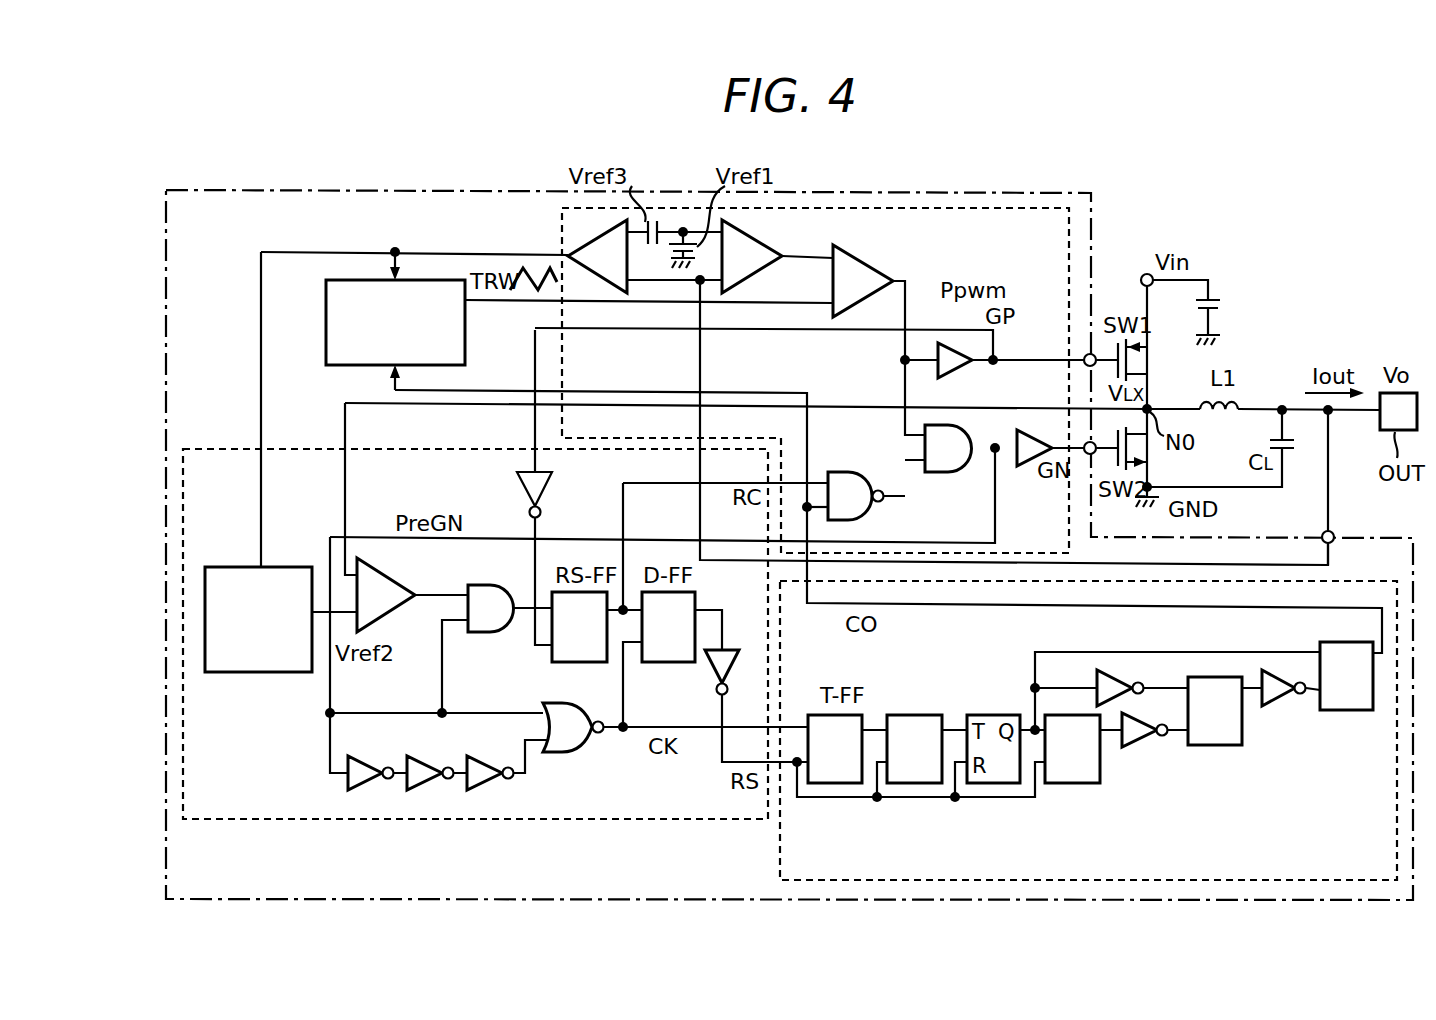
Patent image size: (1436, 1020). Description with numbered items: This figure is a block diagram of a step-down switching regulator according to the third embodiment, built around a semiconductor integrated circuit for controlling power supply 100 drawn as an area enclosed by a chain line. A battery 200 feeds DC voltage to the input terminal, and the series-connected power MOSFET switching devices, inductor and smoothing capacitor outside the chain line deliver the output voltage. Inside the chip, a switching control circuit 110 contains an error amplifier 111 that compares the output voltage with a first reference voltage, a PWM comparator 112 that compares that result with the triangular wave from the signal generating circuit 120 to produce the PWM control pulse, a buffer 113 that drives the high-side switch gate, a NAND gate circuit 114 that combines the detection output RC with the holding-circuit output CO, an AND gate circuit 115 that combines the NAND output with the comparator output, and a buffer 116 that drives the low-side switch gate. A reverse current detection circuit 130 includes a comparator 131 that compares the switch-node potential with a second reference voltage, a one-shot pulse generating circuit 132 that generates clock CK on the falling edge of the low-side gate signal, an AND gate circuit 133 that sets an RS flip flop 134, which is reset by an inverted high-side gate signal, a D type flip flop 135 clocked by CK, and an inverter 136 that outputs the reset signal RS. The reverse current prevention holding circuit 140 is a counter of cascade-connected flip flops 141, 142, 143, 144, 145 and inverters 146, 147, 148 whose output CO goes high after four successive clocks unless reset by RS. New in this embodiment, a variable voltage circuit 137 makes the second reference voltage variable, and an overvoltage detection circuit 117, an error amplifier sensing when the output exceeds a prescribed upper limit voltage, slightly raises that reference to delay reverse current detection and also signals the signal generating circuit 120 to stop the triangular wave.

The semiconductor integrated circuit for controlling power supply 100 is at (1030, 194).
The switching control circuit 110 is at (856, 208).
The error amplifier 111 is at (764, 236).
The PWM comparator 112 is at (870, 266).
The buffer 113 is at (963, 370).
The NAND gate circuit 114 is at (850, 470).
The AND gate circuit 115 is at (944, 474).
The buffer 116 is at (1026, 468).
The overvoltage detection circuit 117 is at (594, 238).
The signal generating circuit 120 is at (340, 368).
The reverse current detection circuit 130 is at (230, 449).
The comparator for reverse current detection 131 is at (410, 588).
The one-shot pulse generating circuit 132 is at (547, 766).
The AND gate circuit 133 is at (482, 634).
The RS flip flop 134 is at (550, 656).
The D type flip flop 135 is at (698, 600).
The inverter 136 is at (706, 670).
The variable voltage circuit 137 is at (244, 566).
The reverse current prevention holding circuit 140 is at (780, 856).
The flip flop 141 is at (833, 785).
The flip flop 142 is at (916, 785).
The flip flop 143 is at (1073, 785).
The flip flop 144 is at (1213, 746).
The flip flop 145 is at (1343, 711).
The inverter 146 is at (1120, 670).
The inverter 147 is at (1138, 745).
The inverter 148 is at (1278, 705).
The battery 200 is at (1216, 300).